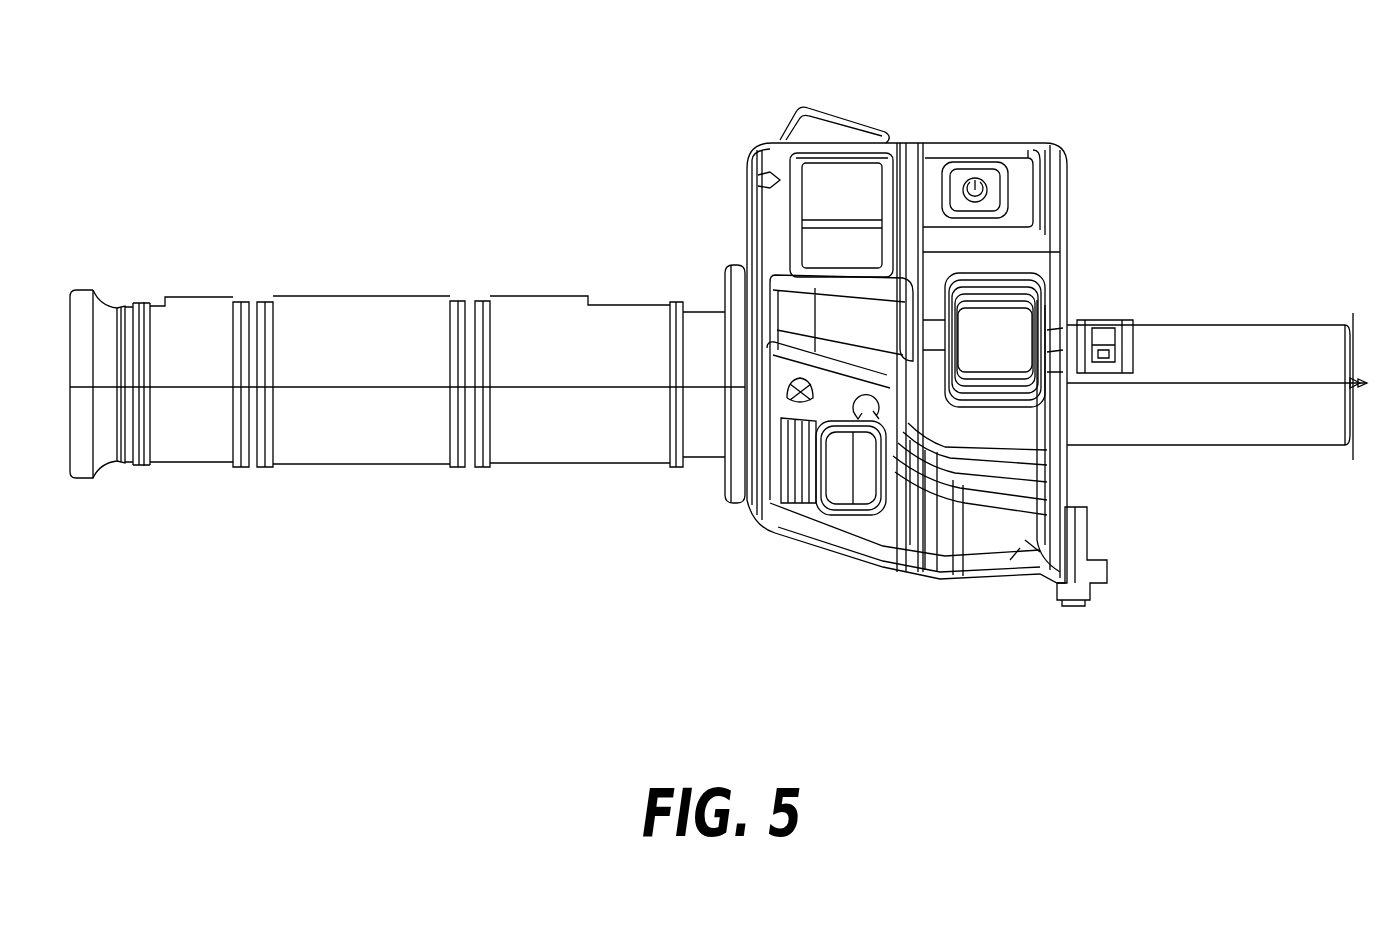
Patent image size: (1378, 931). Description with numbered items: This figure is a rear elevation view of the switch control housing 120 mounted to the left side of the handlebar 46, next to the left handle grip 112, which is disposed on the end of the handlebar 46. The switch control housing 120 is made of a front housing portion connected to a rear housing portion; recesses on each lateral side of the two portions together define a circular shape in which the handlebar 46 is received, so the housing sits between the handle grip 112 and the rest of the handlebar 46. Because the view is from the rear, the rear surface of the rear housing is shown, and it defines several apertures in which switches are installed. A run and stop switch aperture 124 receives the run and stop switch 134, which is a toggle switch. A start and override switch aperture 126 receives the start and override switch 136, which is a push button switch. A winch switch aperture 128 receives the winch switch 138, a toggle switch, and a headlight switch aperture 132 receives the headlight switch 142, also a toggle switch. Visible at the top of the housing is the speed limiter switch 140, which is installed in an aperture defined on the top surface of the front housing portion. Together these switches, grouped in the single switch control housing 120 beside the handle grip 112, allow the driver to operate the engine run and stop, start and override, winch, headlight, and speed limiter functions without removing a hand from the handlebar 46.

The handlebar 46 is at (1228, 322).
The handle grip 112 is at (416, 327).
The switch control housing 120 is at (1088, 242).
The run and stop switch aperture 124 is at (831, 525).
The start and override switch aperture 126 is at (945, 162).
The winch switch aperture 128 is at (1048, 378).
The headlight switch aperture 132 is at (774, 178).
The run and stop switch 134 is at (866, 497).
The start and override switch 136 is at (988, 182).
The winch switch 138 is at (992, 352).
The speed limiter switch 140 is at (813, 113).
The headlight switch 142 is at (837, 203).